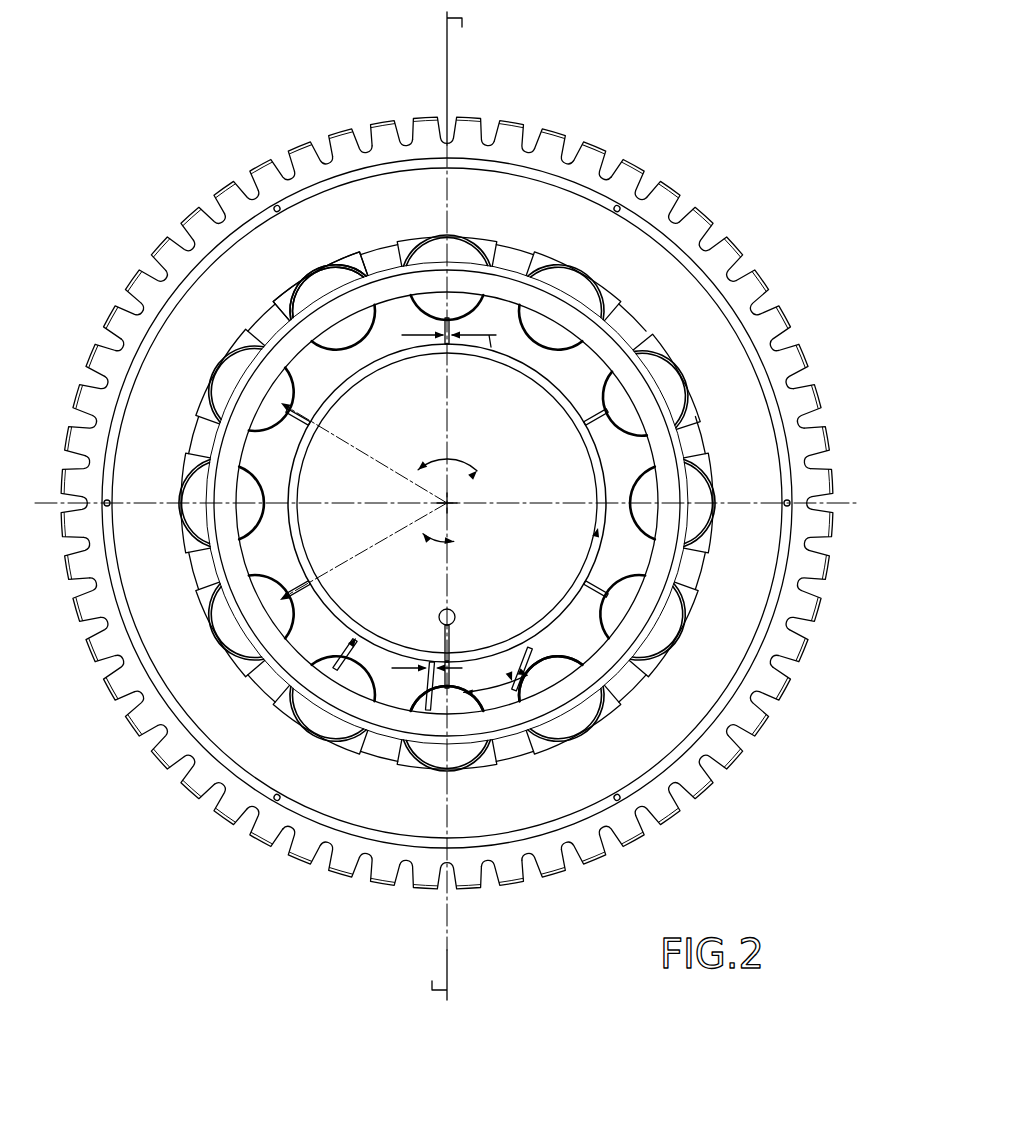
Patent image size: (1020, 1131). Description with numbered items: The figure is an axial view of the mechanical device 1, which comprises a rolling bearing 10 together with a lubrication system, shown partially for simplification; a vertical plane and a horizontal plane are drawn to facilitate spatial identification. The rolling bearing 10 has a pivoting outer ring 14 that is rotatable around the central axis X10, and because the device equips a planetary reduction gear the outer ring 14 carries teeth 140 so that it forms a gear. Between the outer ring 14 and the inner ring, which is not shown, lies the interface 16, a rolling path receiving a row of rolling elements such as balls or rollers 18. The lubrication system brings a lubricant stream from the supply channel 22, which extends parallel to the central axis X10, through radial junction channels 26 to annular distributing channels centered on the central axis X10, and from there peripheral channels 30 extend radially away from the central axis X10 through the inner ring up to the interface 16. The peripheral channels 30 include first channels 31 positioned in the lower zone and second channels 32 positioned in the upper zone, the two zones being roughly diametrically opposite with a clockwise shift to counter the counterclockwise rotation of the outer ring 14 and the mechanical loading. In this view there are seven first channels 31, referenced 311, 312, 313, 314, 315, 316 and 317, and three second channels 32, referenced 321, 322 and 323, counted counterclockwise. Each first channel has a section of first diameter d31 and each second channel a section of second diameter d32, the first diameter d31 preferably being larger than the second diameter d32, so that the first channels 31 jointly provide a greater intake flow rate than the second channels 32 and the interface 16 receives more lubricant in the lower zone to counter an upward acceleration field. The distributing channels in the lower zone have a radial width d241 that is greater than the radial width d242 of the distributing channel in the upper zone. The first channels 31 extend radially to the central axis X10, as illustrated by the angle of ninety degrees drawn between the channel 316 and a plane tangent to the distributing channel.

The mechanical device 1 is at (172, 74).
The rolling bearing 10 is at (735, 158).
The outer ring 14 is at (678, 307).
The teeth 140 is at (762, 318).
The interface 16 is at (628, 455).
The rollers 18 is at (770, 380).
The supply channel 22 is at (447, 608).
The radial junction channels 26 is at (457, 627).
The peripheral channels 30 is at (112, 202).
The first channels 31 is at (294, 499).
The second channels 32 is at (236, 442).
The first channel 311 is at (348, 644).
The first channel 312 is at (368, 692).
The first channel 313 is at (382, 700).
The first channel 314 is at (440, 674).
The first channel 315 is at (464, 706).
The first channel 316 is at (530, 658).
The first channel 317 is at (600, 566).
The second channel 321 is at (583, 318).
The second channel 322 is at (447, 316).
The second channel 323 is at (262, 400).
The central axis X10 is at (454, 505).
The first diameter d31 is at (424, 702).
The second diameter d32 is at (489, 342).
The width d241 is at (590, 636).
The width d242 is at (370, 398).